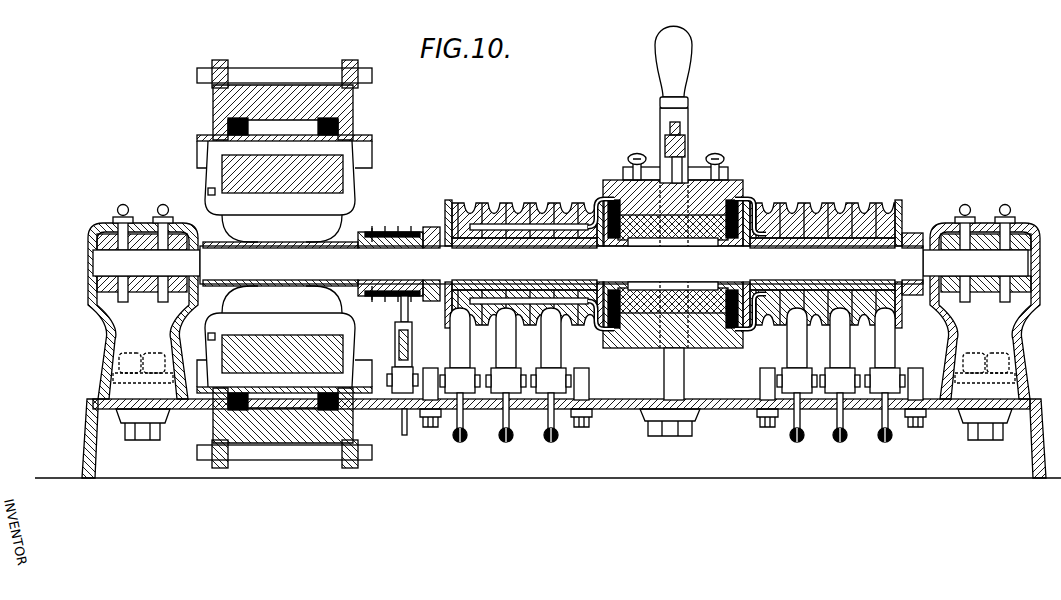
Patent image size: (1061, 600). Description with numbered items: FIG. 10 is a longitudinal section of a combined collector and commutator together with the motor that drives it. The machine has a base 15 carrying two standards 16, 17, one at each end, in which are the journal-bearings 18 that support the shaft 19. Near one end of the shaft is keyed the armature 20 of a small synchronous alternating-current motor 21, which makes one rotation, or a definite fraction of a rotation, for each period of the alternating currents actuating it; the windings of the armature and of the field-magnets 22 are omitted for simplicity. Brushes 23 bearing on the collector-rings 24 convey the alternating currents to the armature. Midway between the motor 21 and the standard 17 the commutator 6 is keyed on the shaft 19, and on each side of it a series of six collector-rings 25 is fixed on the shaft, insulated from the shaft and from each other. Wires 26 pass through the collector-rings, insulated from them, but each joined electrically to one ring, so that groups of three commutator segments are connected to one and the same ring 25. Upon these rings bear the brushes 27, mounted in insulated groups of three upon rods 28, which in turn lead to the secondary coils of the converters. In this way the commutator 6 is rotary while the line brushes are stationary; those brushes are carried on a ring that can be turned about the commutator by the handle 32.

The commutator 6 is at (684, 163).
The base 15 is at (105, 456).
The standard 16 is at (140, 350).
The standard 17 is at (992, 350).
The journal-bearings 18 is at (115, 242).
The shaft 19 is at (560, 265).
The armature 20 is at (271, 348).
The alternating-current motor 21 is at (272, 264).
The field-magnets 22 is at (270, 127).
The brushes 23 is at (401, 316).
The collector-rings 24 is at (402, 231).
The collector-rings 25 is at (510, 205).
The wires 26 is at (549, 222).
The brushes 27 is at (455, 345).
The rods 28 is at (588, 386).
The handle 32 is at (683, 68).